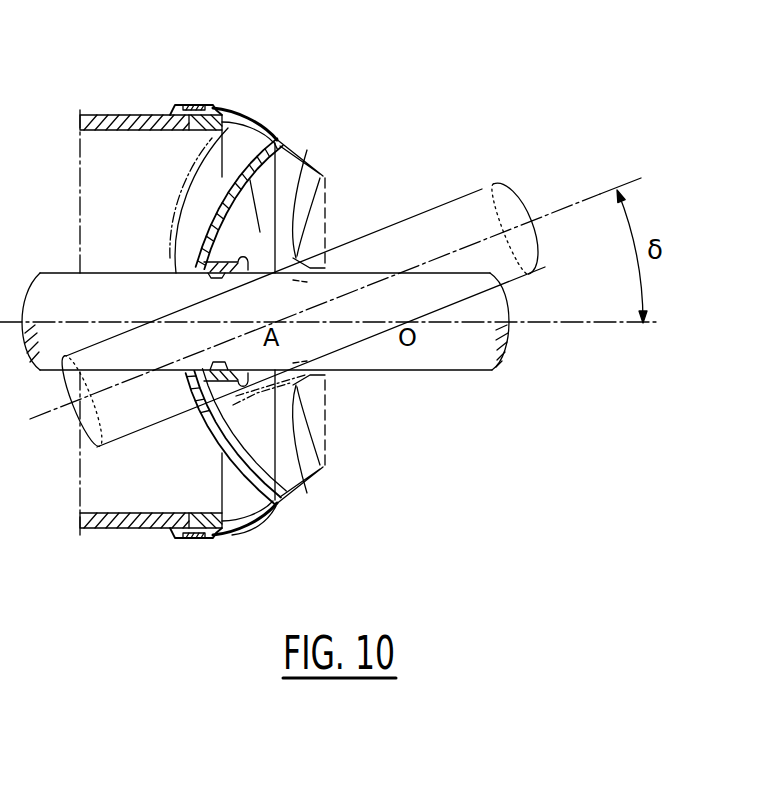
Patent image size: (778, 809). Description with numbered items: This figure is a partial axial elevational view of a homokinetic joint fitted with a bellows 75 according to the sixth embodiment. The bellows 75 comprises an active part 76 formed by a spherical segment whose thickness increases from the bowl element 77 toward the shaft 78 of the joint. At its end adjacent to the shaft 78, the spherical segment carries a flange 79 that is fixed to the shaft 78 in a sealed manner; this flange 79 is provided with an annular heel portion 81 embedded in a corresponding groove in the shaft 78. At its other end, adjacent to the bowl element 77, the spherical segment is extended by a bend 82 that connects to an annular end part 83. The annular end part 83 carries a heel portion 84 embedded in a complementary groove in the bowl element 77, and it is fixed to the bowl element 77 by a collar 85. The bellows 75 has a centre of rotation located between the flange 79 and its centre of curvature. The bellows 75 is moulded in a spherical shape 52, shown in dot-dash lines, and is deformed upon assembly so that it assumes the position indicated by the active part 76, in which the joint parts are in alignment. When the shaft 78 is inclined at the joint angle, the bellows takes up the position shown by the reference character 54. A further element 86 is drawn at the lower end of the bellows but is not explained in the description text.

The outer shell / retaining member 52 is at (327, 158).
The sealing boot 54 is at (224, 162).
The boot wall 75 is at (258, 103).
The hatched boot section 76 is at (218, 222).
The housing flange 77 is at (118, 115).
The shaft 78 is at (477, 197).
The inner sealing ring 79 is at (229, 262).
The inner sealing ring lower portion 81 is at (222, 360).
The boot corner fold 82 is at (278, 137).
The clamp insert 83 is at (207, 104).
The clamp foot 84 is at (196, 130).
The clamp ring 85 is at (194, 104).
The lower boot lip 86 is at (248, 524).